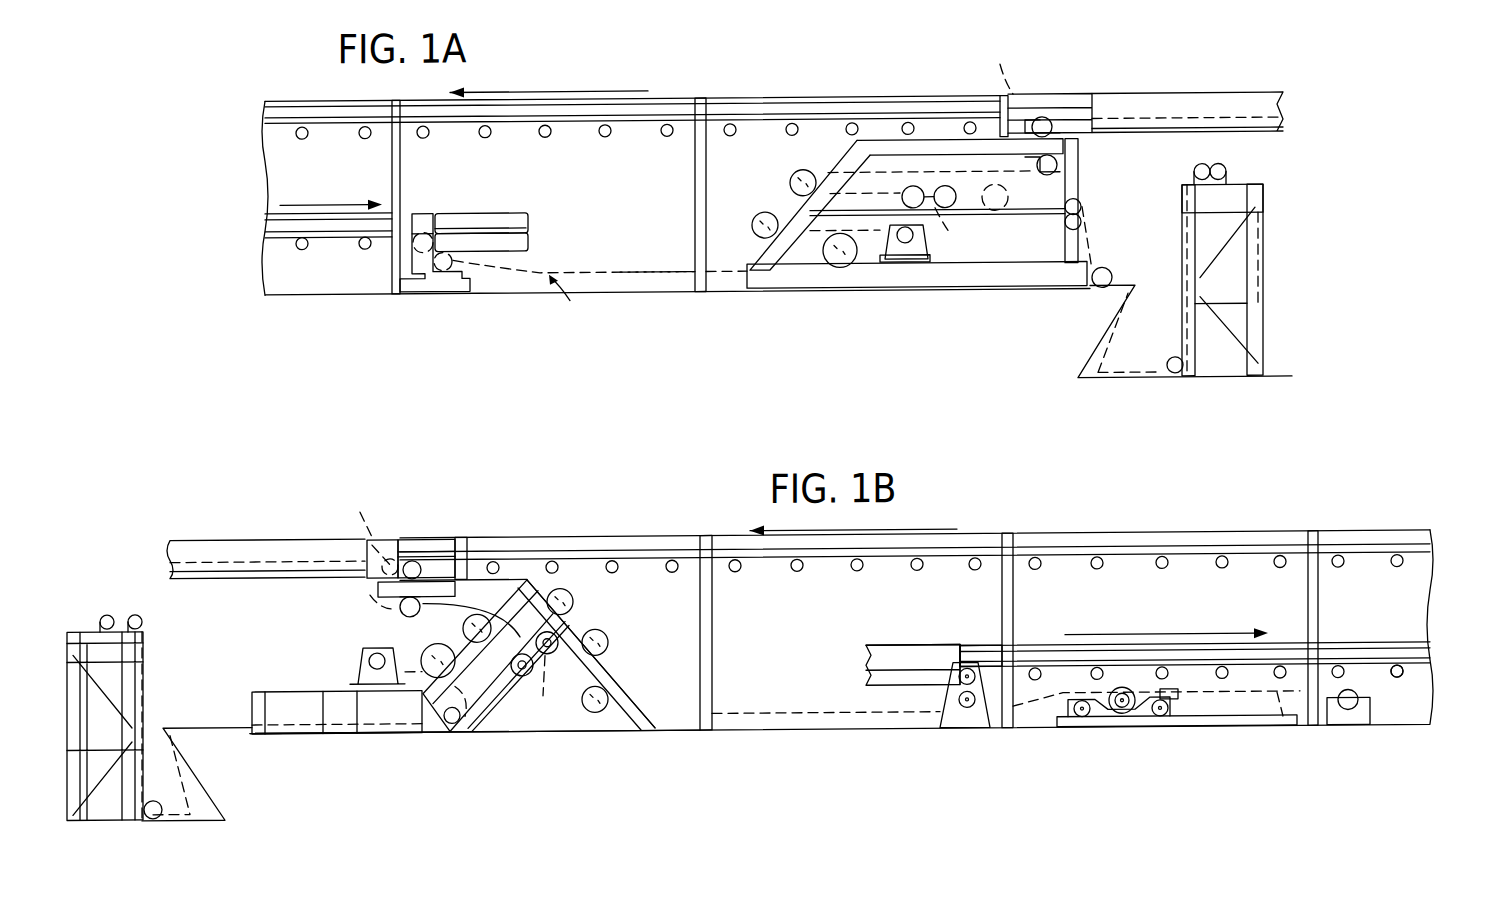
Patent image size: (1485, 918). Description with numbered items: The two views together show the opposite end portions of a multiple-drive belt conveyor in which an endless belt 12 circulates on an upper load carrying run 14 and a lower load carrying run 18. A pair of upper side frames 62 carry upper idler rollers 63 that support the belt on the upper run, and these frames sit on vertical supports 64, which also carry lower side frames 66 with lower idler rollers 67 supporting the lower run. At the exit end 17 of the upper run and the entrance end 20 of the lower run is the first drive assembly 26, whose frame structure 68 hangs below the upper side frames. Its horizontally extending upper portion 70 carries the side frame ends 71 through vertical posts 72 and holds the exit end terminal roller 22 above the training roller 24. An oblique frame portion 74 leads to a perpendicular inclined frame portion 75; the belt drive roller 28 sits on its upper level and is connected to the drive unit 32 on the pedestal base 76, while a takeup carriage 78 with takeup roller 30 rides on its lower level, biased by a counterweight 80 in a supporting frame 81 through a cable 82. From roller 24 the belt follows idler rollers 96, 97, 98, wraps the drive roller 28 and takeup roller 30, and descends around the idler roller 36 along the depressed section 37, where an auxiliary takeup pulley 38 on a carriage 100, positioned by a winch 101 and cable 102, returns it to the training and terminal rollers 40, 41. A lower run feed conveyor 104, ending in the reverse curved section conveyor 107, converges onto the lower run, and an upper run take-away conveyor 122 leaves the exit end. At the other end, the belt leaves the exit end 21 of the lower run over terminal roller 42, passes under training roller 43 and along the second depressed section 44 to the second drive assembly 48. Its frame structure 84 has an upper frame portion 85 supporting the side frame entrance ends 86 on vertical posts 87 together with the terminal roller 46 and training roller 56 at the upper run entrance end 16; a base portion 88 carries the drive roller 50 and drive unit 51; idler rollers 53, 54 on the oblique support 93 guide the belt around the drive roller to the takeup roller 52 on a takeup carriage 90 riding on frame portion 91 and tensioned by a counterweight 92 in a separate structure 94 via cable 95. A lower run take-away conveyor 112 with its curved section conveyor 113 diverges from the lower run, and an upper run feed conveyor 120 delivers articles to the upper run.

In FIG. 1A, the endless belt 12 is at (640, 276).
In FIG. 1B, the endless belt 12 is at (811, 716).
In FIG. 1A, the upper load carrying run 14 is at (836, 104).
In FIG. 1B, the upper load carrying run 14 is at (1122, 542).
In FIG. 1A, the entrance end of the upper run 16 is at (1063, 98).
In FIG. 1B, the exit end of the upper run 17 is at (408, 534).
In FIG. 1A, the lower load carrying run 18 is at (280, 206).
In FIG. 1B, the lower load carrying run 18 is at (1359, 653).
In FIG. 1B, the entrance end of the lower run 20 is at (962, 646).
In FIG. 1A, the exit end of the lower run 21 is at (426, 216).
In FIG. 1B, the exit end terminal roller 22 is at (363, 535).
In FIG. 1B, the training roller 24 is at (395, 598).
In FIG. 1B, the first drive assembly 26 is at (637, 616).
In FIG. 1B, the belt drive roller 28 is at (419, 652).
In FIG. 1B, the takeup roller 30 is at (536, 680).
In FIG. 1B, the drive unit 32 is at (360, 658).
In FIG. 1B, the idler roller 36 is at (595, 717).
In FIG. 1B, the depressed section 37 is at (776, 736).
In FIG. 1B, the auxiliary takeup pulley 38 is at (1130, 718).
In FIG. 1B, the training roller 40 is at (955, 706).
In FIG. 1B, the terminal roller 41 is at (945, 670).
In FIG. 1A, the terminal roller 42 is at (455, 219).
In FIG. 1A, the training roller 43 is at (600, 258).
In FIG. 1A, the second depressed section 44 is at (570, 299).
In FIG. 1A, the terminal roller 46 is at (997, 66).
In FIG. 1A, the second drive assembly 48 is at (768, 170).
In FIG. 1A, the belt drive roller 50 is at (832, 274).
In FIG. 1A, the drive unit 51 is at (906, 270).
In FIG. 1A, the takeup roller 52 is at (948, 222).
In FIG. 1A, the idler roller 53 is at (754, 233).
In FIG. 1A, the idler roller 54 is at (790, 190).
In FIG. 1A, the training roller 56 is at (1065, 175).
In FIG. 1A, the upper side frames 62 is at (734, 103).
In FIG. 1B, the upper side frames 62 is at (1218, 540).
In FIG. 1A, the upper idler rollers 63 is at (664, 141).
In FIG. 1B, the upper idler rollers 63 is at (800, 575).
In FIG. 1A, the vertical supports 64 is at (402, 165).
In FIG. 1B, the vertical supports 64 is at (713, 631).
In FIG. 1A, the lower side frames 66 is at (358, 251).
In FIG. 1B, the lower side frames 66 is at (1389, 658).
In FIG. 1A, the lower idler rollers 67 is at (306, 251).
In FIG. 1B, the lower idler rollers 67 is at (1404, 682).
In FIG. 1B, the frame structure 68 is at (560, 580).
In FIG. 1B, the upper horizontally extending portion 70 is at (522, 584).
In FIG. 1B, the ends of the side frames 71 is at (442, 542).
In FIG. 1B, the vertical posts 72 is at (464, 543).
In FIG. 1B, the frame portion 74 is at (614, 684).
In FIG. 1B, the downwardly inclined frame portion 75 is at (490, 723).
In FIG. 1B, the pedestal base 76 is at (309, 693).
In FIG. 1B, the takeup carriage 78 is at (525, 720).
In FIG. 1B, the counterweight 80 is at (90, 632).
In FIG. 1B, the supporting frame 81 is at (142, 658).
In FIG. 1B, the cable 82 is at (217, 729).
In FIG. 1A, the frame structure 84 is at (1090, 209).
In FIG. 1A, the upper horizontal frame portion 85 is at (880, 147).
In FIG. 1A, the entrance ends of the upper side frames 86 is at (1038, 100).
In FIG. 1A, the vertical posts 87 is at (996, 102).
In FIG. 1A, the base portion 88 is at (993, 294).
In FIG. 1A, the takeup carriage 90 is at (960, 215).
In FIG. 1A, the frame portion 91 is at (1040, 227).
In FIG. 1A, the counterweight 92 is at (1242, 220).
In FIG. 1A, the oblique support 93 is at (762, 248).
In FIG. 1A, the separate structure 94 is at (1263, 248).
In FIG. 1A, the cable 95 is at (1184, 248).
In FIG. 1B, the idler roller 96 is at (463, 634).
In FIG. 1B, the idler roller 97 is at (572, 598).
In FIG. 1B, the idler roller 98 is at (610, 649).
In FIG. 1B, the carriage 100 is at (1178, 708).
In FIG. 1B, the winch 101 is at (1370, 717).
In FIG. 1B, the cable 102 is at (1283, 735).
In FIG. 1B, the lower run feed conveyor 104 is at (860, 661).
In FIG. 1B, the second reverse curved section conveyor 107 is at (881, 652).
In FIG. 1A, the lower run take-away conveyor 112 is at (535, 235).
In FIG. 1A, the curved section conveyor 113 is at (510, 217).
In FIG. 1A, the upper run feed conveyor 120 is at (1214, 102).
In FIG. 1B, the upper run take-away conveyor 122 is at (278, 542).